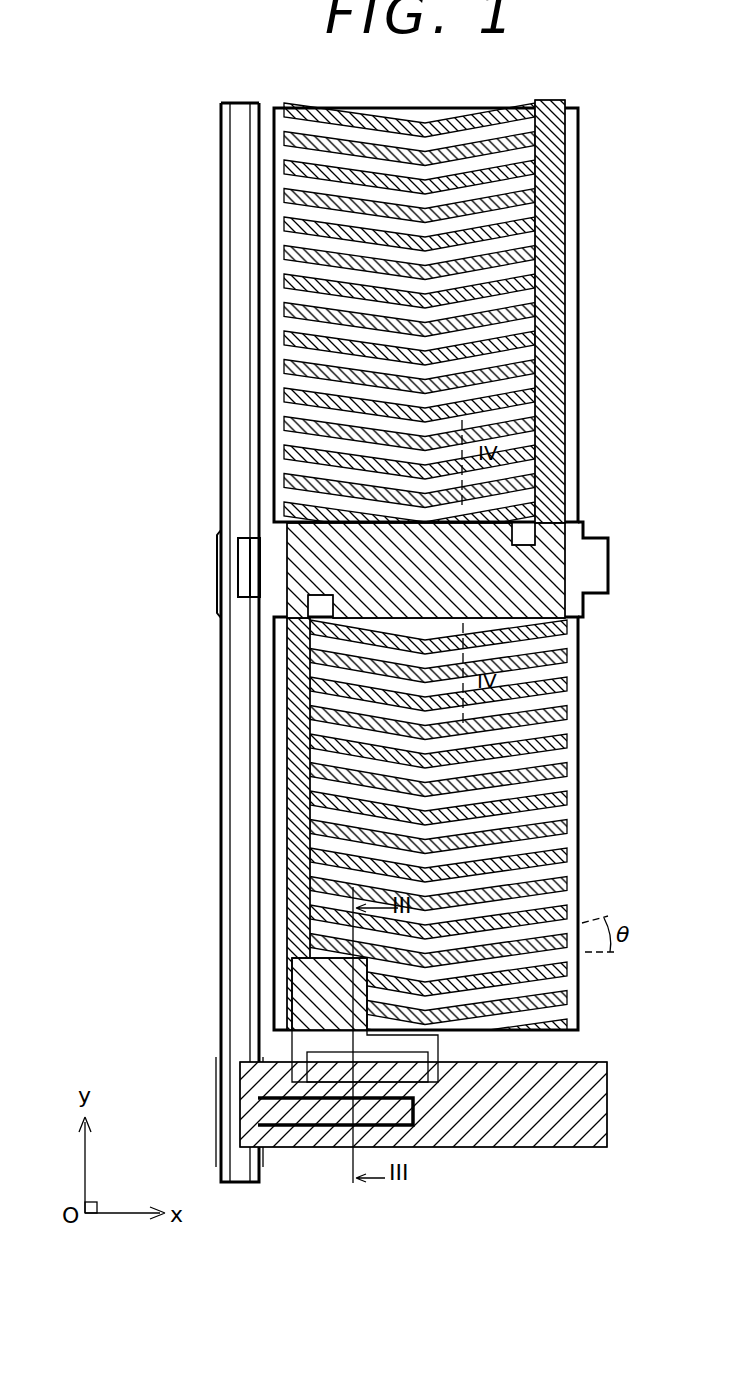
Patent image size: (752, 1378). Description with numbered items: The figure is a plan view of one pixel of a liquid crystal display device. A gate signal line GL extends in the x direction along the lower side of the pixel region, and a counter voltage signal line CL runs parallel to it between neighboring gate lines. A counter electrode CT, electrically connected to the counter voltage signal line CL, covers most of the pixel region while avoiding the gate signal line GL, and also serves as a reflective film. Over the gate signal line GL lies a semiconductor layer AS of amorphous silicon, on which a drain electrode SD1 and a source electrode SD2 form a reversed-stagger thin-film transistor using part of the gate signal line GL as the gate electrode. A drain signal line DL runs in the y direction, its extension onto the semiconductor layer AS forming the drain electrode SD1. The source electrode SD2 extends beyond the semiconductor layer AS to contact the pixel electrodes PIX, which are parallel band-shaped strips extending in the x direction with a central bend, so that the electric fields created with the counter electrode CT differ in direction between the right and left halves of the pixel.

The pixel electrode PIX is at (286, 313).
The counter electrode CT is at (273, 453).
The counter voltage signal line CL is at (608, 568).
The drain signal line DL is at (221, 735).
The gate signal line GL is at (607, 1083).
The drain electrode SD1 is at (312, 1123).
The source electrode SD2 is at (435, 1047).
The semiconductor layer AS is at (410, 1137).